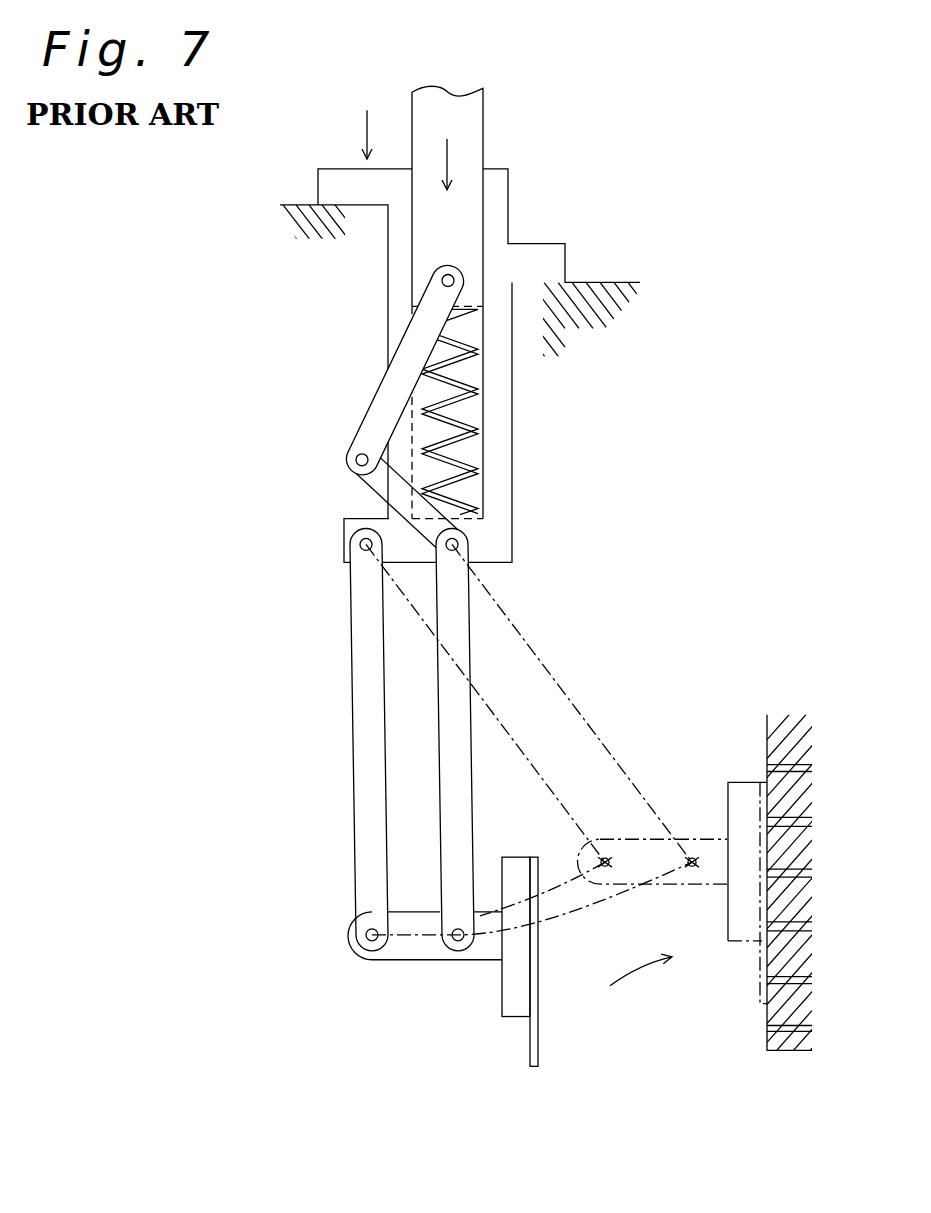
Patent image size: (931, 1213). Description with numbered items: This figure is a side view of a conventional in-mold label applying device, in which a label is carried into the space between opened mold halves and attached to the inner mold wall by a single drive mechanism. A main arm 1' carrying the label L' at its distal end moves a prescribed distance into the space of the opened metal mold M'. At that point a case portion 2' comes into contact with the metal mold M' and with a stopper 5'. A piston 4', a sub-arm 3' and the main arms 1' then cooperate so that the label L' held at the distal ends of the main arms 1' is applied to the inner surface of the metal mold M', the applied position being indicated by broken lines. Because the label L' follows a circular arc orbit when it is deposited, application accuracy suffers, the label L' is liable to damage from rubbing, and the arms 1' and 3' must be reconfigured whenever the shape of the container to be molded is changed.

The main arm 1' is at (476, 739).
The case portion 2' is at (503, 365).
The sub-arm 3' is at (361, 411).
The piston 4' is at (479, 279).
The stopper 5' is at (302, 344).
The metal mold M' is at (721, 657).
The label L' is at (537, 958).